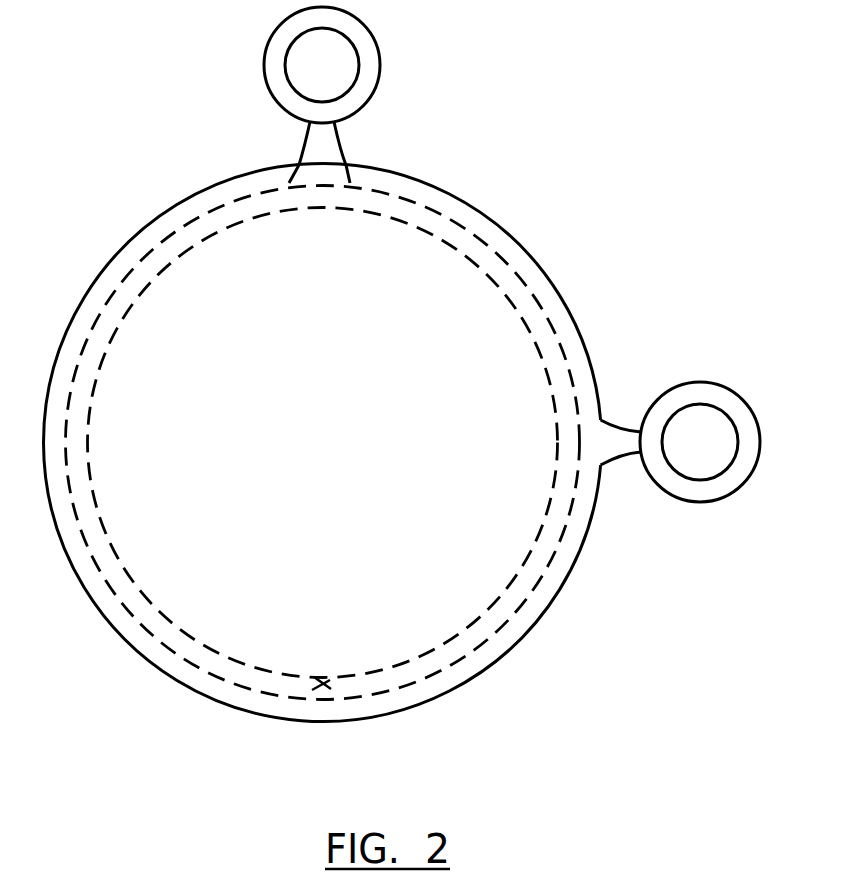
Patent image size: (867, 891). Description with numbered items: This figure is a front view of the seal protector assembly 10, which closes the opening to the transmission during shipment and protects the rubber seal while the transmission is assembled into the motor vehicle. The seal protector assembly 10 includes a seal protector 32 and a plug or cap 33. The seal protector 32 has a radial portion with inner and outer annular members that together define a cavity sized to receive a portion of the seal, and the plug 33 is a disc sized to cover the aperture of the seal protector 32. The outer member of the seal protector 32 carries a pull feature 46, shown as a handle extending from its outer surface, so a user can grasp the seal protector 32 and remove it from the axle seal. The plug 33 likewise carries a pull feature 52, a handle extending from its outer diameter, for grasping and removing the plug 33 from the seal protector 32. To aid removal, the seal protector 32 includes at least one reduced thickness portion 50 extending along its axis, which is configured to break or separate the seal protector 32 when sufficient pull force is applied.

The seal protector assembly 10 is at (114, 108).
The plug 33 is at (473, 203).
The seal protector 32 is at (385, 662).
The reduced thickness portion 50 is at (322, 685).
The pull feature 46 is at (380, 58).
The pull feature 52 is at (698, 382).